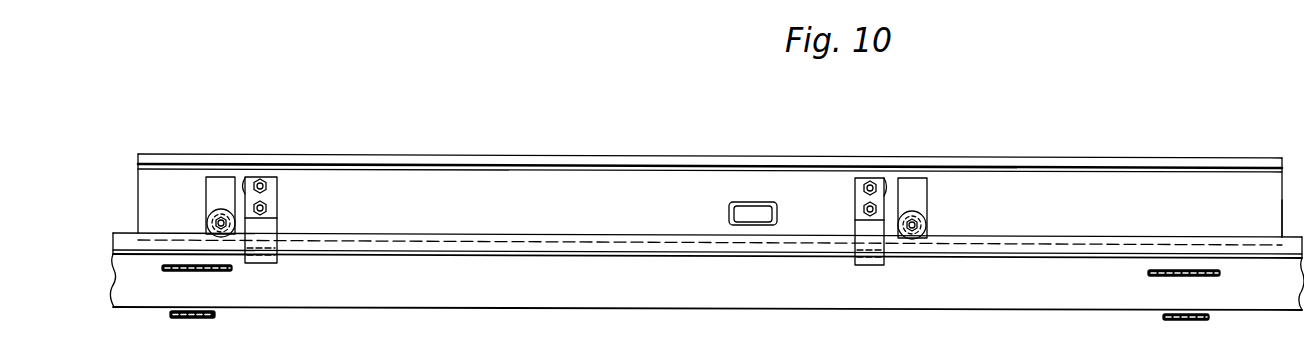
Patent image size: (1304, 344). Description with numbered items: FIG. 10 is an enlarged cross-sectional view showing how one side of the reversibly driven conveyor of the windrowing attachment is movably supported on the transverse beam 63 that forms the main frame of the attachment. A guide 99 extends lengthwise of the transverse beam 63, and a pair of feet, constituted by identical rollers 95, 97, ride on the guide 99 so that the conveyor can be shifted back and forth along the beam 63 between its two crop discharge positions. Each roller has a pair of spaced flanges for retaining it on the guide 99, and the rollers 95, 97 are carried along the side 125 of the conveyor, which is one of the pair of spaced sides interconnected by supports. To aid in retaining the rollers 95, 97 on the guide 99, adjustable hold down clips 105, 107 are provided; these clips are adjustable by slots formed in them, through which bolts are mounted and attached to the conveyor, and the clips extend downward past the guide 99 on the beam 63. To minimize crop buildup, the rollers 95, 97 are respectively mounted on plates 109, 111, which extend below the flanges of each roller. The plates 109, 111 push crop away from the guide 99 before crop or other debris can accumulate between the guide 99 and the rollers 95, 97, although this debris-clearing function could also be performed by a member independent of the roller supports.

The side 125 is at (534, 212).
The transverse beam 63 is at (362, 300).
The plate 111 is at (220, 183).
The roller 97 is at (203, 223).
The adjustable hold down clip 105 is at (268, 228).
The adjustable hold down clip 107 is at (860, 230).
The plate 109 is at (913, 187).
The roller 95 is at (936, 219).
The guide 99 is at (1281, 235).